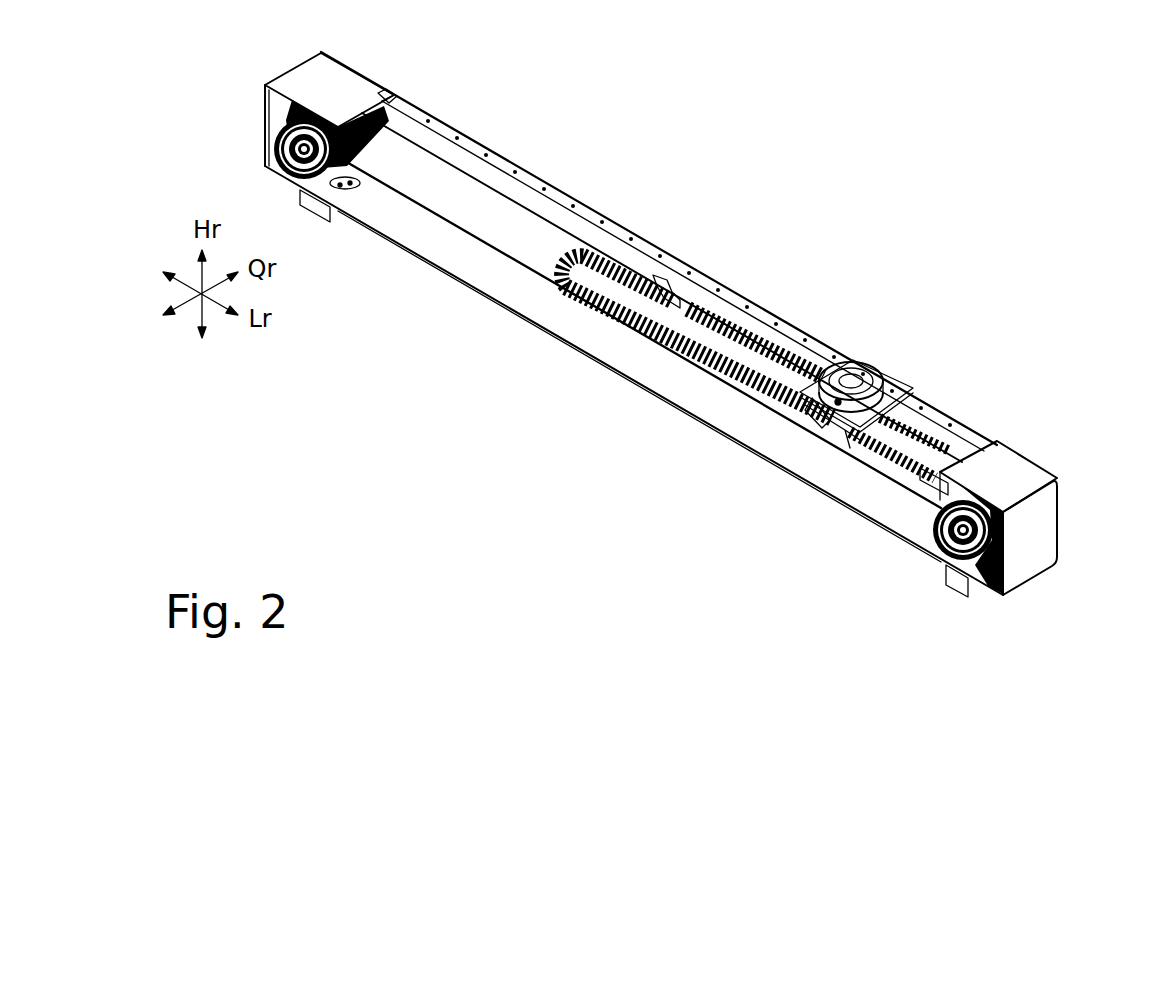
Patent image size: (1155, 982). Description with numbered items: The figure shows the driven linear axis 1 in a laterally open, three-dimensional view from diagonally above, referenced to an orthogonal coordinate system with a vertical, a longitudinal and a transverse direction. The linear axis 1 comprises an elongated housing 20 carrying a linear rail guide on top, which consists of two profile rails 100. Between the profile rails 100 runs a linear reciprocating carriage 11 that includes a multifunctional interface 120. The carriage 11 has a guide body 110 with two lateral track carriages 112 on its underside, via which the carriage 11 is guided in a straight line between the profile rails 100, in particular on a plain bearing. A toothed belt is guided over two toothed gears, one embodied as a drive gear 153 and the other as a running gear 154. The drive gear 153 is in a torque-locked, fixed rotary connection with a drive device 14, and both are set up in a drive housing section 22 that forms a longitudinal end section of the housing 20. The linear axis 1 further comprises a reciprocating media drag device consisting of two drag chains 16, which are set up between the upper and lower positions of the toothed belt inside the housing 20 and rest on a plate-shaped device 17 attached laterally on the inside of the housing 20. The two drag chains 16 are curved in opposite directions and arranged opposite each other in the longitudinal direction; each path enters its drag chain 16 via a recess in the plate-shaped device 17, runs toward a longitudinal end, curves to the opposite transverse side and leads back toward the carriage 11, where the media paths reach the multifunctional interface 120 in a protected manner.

The driven linear axis 1 is at (705, 313).
The carriage 11 is at (822, 428).
The drive device 14 is at (932, 532).
The drag chains 16 is at (573, 297).
The plate-shaped device 17 is at (509, 237).
The housing 20 is at (613, 373).
The drive housing section 22 is at (1028, 545).
The profile rails 100 is at (503, 167).
The guide body 110 is at (827, 427).
The track carriages 112 is at (807, 420).
The multifunctional interface 120 is at (882, 392).
The drive gear 153 is at (982, 487).
The running gear 154 is at (400, 98).